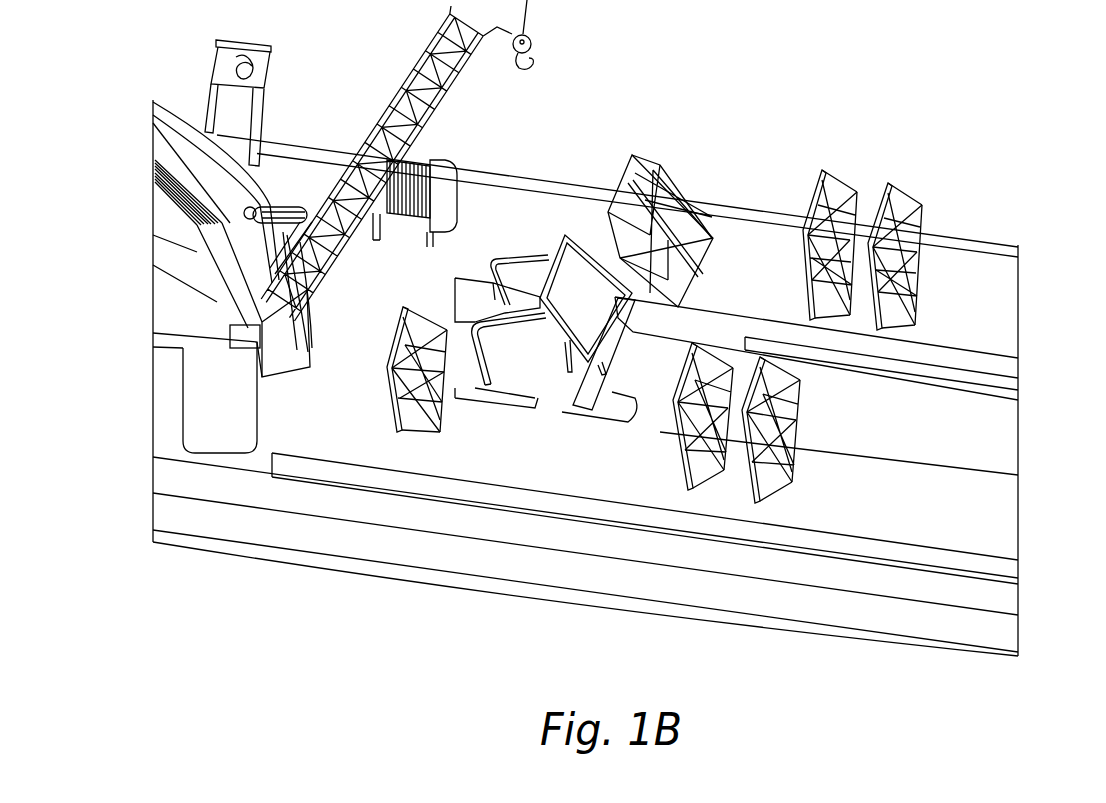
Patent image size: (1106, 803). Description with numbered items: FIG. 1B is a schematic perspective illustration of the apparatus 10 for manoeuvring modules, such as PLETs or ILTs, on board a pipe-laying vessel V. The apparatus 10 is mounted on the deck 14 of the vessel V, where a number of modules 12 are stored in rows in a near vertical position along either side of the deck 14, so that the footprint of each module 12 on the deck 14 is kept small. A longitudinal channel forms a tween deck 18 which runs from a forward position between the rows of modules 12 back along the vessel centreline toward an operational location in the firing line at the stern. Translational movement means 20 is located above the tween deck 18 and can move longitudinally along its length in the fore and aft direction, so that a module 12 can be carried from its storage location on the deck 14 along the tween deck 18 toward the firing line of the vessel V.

The apparatus 10 is at (752, 122).
The module 12 is at (656, 166).
The deck 14 is at (581, 475).
The tween deck 18 is at (931, 437).
The translational movement means 20 is at (551, 210).
The vessel V is at (412, 545).